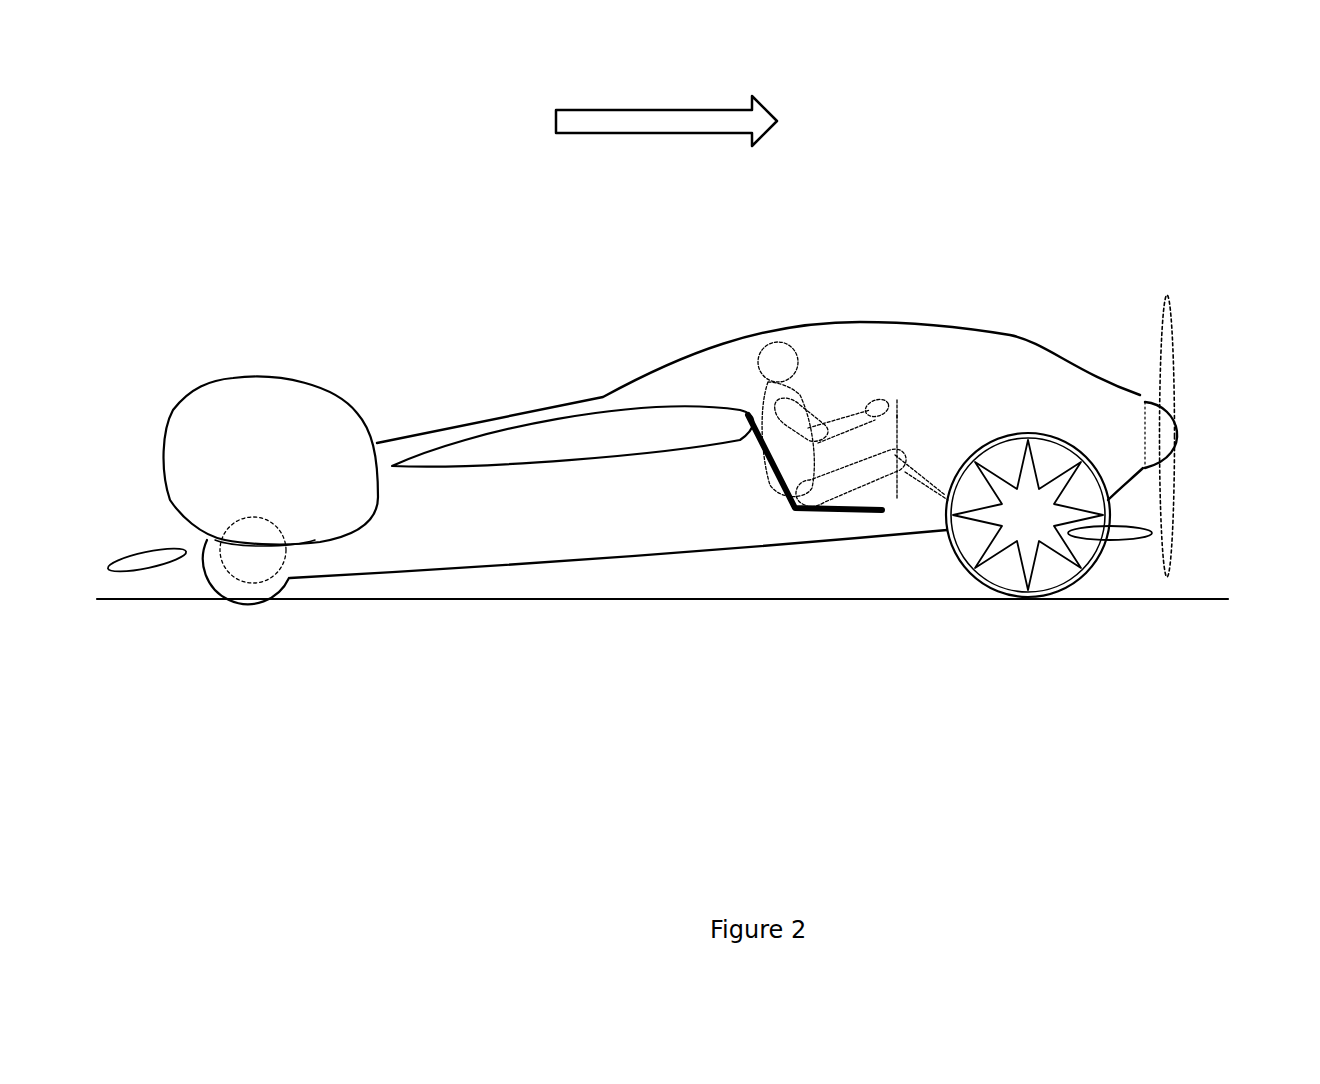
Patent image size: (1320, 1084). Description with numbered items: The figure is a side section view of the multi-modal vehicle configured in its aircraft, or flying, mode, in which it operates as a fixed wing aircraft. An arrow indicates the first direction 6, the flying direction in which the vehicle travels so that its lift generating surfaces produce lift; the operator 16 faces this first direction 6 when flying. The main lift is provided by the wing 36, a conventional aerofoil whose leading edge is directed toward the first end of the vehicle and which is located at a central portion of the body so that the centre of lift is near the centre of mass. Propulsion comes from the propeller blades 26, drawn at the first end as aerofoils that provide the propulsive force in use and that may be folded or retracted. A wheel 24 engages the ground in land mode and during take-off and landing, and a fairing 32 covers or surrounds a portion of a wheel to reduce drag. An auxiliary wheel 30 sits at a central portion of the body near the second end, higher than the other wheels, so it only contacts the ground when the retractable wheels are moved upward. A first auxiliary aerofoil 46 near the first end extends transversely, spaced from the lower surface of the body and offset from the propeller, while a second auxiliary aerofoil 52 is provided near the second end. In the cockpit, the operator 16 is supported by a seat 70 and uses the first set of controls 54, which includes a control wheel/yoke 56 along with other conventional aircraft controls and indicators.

The first direction 6 is at (666, 100).
The operator 16 is at (776, 353).
The wheel 24 is at (1058, 545).
The blades 26 is at (1168, 345).
The auxiliary wheel 30 is at (230, 560).
The fairing 32 is at (238, 435).
The wing 36 is at (598, 440).
The first auxiliary aerofoil 46 is at (1143, 532).
The second auxiliary aerofoil 52 is at (150, 557).
The first set of controls 54 is at (890, 372).
The control wheel/yoke 56 is at (905, 395).
The seat 70 is at (835, 512).